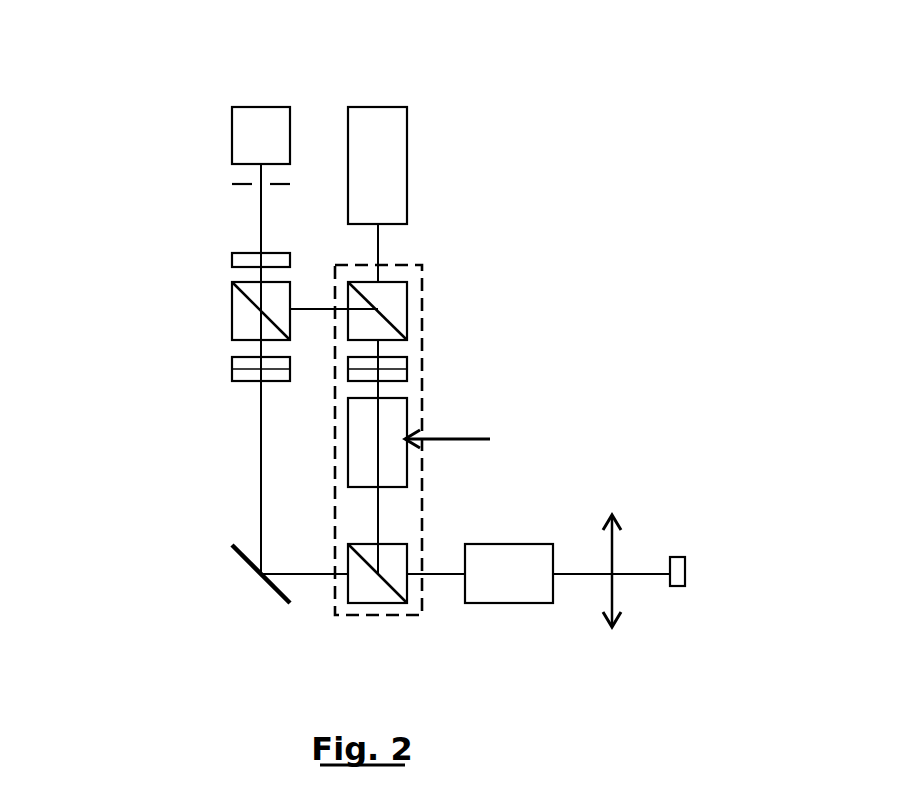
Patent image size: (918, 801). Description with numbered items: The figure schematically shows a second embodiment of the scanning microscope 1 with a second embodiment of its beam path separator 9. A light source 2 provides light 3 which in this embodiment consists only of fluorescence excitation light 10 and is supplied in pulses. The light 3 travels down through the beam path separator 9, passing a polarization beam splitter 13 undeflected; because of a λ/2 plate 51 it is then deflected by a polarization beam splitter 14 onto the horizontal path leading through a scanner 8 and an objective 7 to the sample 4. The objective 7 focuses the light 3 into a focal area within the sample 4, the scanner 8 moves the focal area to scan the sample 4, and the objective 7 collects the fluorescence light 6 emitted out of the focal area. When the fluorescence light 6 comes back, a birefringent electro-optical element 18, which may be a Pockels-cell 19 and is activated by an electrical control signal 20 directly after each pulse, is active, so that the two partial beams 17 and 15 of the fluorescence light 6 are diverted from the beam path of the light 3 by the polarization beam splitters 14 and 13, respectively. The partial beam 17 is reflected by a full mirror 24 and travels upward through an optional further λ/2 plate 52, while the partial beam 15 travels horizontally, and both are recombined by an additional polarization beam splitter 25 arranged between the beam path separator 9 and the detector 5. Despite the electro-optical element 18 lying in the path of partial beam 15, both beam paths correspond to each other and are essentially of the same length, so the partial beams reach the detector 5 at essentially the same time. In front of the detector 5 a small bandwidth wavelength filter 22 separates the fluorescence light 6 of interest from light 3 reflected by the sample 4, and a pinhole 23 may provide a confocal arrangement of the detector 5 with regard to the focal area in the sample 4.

The scanning microscope 1 is at (90, 99).
The light source 2 is at (419, 149).
The light 3 is at (378, 239).
The sample 4 is at (682, 605).
The detector 5 is at (220, 142).
The fluorescence light 6 is at (261, 217).
The objective 7 is at (614, 592).
The scanner 8 is at (514, 618).
The beam path separator 9 is at (438, 424).
The fluorescence excitation light 10 is at (378, 255).
The polarization beam splitter 13 is at (407, 308).
The polarization beam splitter 14 is at (385, 602).
The first partial beam 15 is at (381, 520).
The other partial beam 17 is at (310, 575).
The birefringent electro-optical element 18 is at (449, 423).
The Pockels-cell 19 is at (397, 410).
The electrical control signal 20 is at (467, 440).
The small bandwidth wavelength filter 22 is at (232, 258).
The pinhole 23 is at (232, 183).
The full mirror 24 is at (268, 587).
The additional polarization beam splitter 25 is at (232, 310).
The λ/2 plate 51 is at (407, 363).
The further λ/2 plate 52 is at (232, 362).